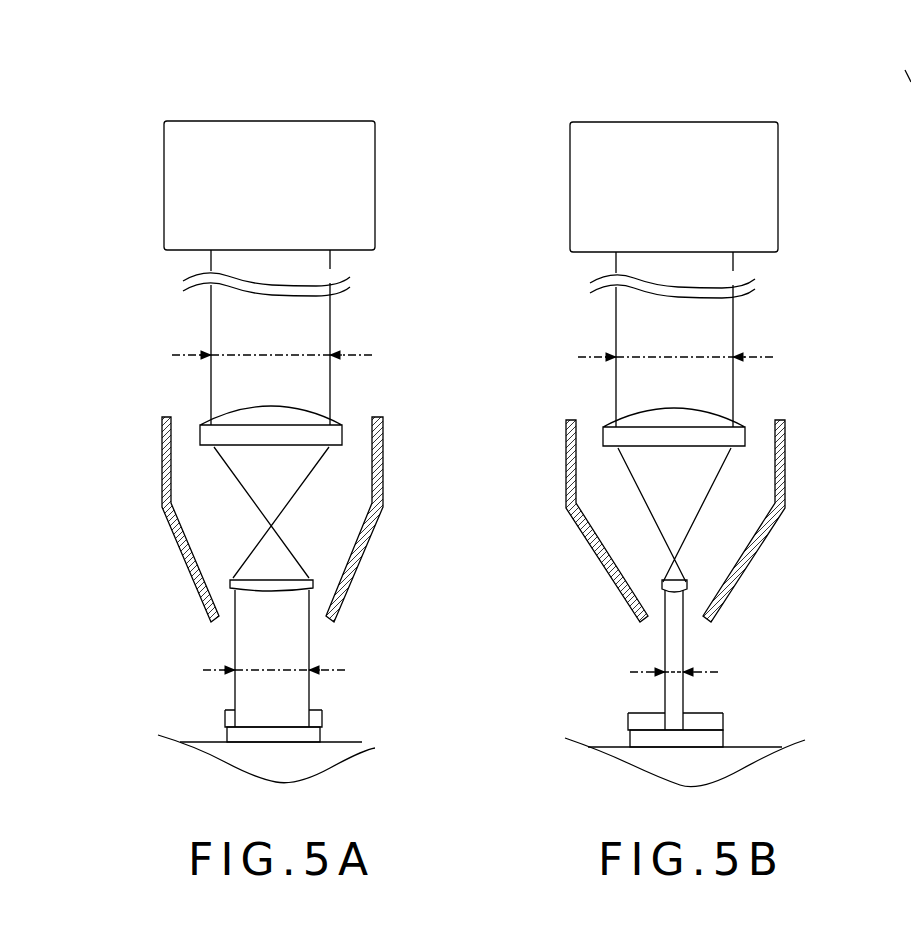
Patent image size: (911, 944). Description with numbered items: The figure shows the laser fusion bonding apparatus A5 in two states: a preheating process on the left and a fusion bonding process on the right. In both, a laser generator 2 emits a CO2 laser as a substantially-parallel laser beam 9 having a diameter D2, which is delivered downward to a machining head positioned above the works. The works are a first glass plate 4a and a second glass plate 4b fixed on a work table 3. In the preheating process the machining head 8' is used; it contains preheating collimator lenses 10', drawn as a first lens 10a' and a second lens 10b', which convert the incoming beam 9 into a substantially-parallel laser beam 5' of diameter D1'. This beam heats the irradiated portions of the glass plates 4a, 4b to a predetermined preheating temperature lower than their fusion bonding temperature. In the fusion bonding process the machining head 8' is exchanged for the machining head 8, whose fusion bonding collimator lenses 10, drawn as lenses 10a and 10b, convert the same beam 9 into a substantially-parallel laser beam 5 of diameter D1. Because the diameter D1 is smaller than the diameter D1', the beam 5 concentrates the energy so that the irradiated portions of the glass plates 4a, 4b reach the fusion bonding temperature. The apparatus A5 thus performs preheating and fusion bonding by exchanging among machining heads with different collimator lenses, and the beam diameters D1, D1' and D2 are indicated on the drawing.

In FIG. 5A, the laser fusion bonding apparatus A5 is at (141, 131).
In FIG. 5B, the laser fusion bonding apparatus A5 is at (547, 131).
In FIG. 5A, the laser generator 2 is at (375, 186).
In FIG. 5B, the laser generator 2 is at (778, 190).
In FIG. 5A, the substantially-parallel laser beam 9 is at (330, 328).
In FIG. 5B, the substantially-parallel laser beam 9 is at (735, 330).
In FIG. 5A, the preheating collimator lenses 10' is at (373, 498).
In FIG. 5A, the preheating collimator lens 10a' is at (340, 449).
In FIG. 5A, the preheating collimator lens 10b' is at (355, 547).
In FIG. 5B, the fusion bonding collimator lenses 10 is at (757, 500).
In FIG. 5B, the fusion bonding collimator lens 10a is at (741, 451).
In FIG. 5B, the fusion bonding collimator lens 10b is at (771, 548).
In FIG. 5A, the machining head 8' is at (251, 519).
In FIG. 5B, the machining head 8 is at (659, 521).
In FIG. 5A, the substantially-parallel laser beam 5' is at (335, 587).
In FIG. 5B, the laser beam 5 is at (736, 589).
In FIG. 5A, the glass plate 4a is at (327, 720).
In FIG. 5B, the glass plate 4a is at (722, 722).
In FIG. 5A, the glass plate 4b is at (330, 735).
In FIG. 5B, the glass plate 4b is at (722, 738).
In FIG. 5A, the work table 3 is at (340, 742).
In FIG. 5B, the work table 3 is at (745, 747).
In FIG. 5A, the diameter D1' is at (281, 657).
In FIG. 5B, the diameter D1 is at (694, 672).
In FIG. 5A, the diameter D2 is at (290, 356).
In FIG. 5B, the diameter D2 is at (695, 357).